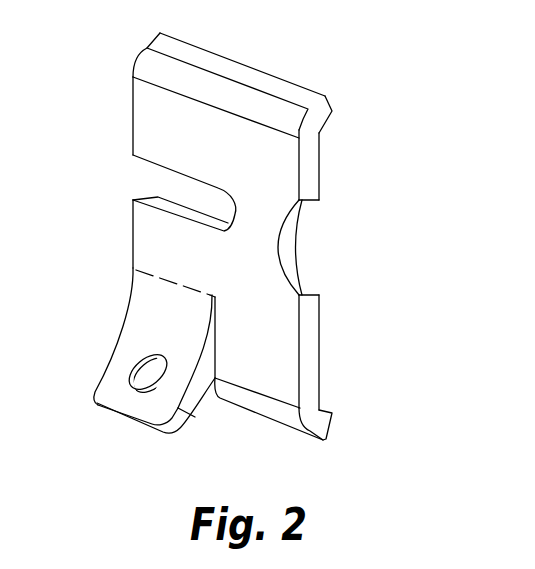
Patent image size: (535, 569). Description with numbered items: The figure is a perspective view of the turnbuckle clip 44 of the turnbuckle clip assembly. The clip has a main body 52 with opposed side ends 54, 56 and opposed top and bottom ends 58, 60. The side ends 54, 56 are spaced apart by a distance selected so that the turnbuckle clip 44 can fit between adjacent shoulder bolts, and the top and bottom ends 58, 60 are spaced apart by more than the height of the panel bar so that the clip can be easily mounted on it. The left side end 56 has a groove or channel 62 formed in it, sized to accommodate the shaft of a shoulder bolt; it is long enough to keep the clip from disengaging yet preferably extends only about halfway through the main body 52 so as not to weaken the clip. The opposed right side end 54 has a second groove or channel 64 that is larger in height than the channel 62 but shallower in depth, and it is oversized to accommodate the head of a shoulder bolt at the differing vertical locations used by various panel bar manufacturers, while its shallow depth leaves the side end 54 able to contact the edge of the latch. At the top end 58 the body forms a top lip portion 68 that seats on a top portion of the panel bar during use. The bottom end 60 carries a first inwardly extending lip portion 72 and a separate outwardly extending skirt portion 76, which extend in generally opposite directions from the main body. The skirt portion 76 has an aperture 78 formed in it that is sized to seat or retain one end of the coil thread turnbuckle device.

The turnbuckle clip 44 is at (375, 190).
The main body 52 is at (162, 117).
The side end 54 is at (312, 362).
The side end 56 is at (133, 252).
The top end 58 is at (257, 67).
The bottom end 60 is at (266, 419).
The channel 62 is at (143, 182).
The channel 64 is at (308, 245).
The lip portion 68 is at (332, 108).
The lip portion 72 is at (330, 428).
The skirt portion 76 is at (123, 418).
The aperture 78 is at (133, 368).